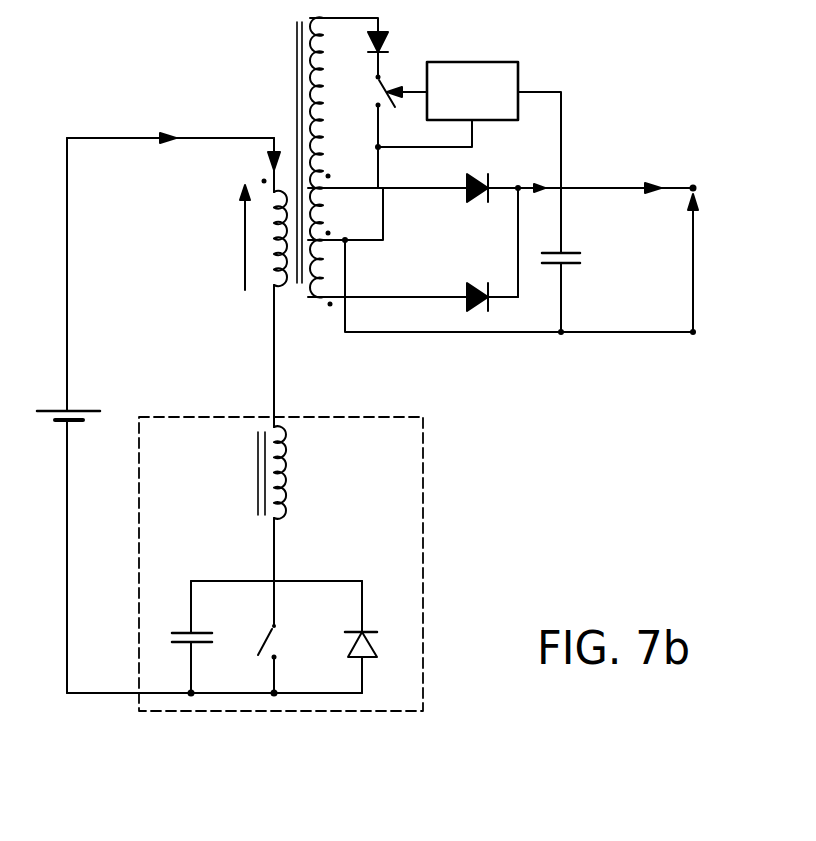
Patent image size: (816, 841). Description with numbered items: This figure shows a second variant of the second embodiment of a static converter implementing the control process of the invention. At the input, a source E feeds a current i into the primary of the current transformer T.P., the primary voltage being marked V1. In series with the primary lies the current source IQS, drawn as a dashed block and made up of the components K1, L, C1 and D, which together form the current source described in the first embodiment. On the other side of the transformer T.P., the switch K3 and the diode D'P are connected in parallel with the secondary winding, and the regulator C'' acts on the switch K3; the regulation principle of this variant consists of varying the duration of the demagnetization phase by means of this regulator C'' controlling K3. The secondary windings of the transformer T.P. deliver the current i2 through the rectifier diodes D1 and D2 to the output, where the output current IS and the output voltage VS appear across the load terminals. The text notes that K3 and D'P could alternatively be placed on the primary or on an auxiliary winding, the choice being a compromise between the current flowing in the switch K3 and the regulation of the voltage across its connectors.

The DC voltage source E is at (68, 415).
The primary current i is at (170, 124).
The current transformer T.P. is at (242, 221).
The primary voltage V1 is at (234, 237).
The diode D'P is at (371, 47).
The switch K3 is at (370, 132).
The regulator C'' is at (468, 197).
The rectifier diode D1 is at (413, 200).
The rectifier diode D2 is at (413, 249).
The secondary current i2 is at (604, 174).
The output current IS is at (693, 172).
The output voltage VS is at (705, 262).
The current source IQS is at (299, 564).
The inductor L is at (281, 503).
The capacitor C1 is at (197, 639).
The switch K1 is at (282, 639).
The diode D is at (372, 637).